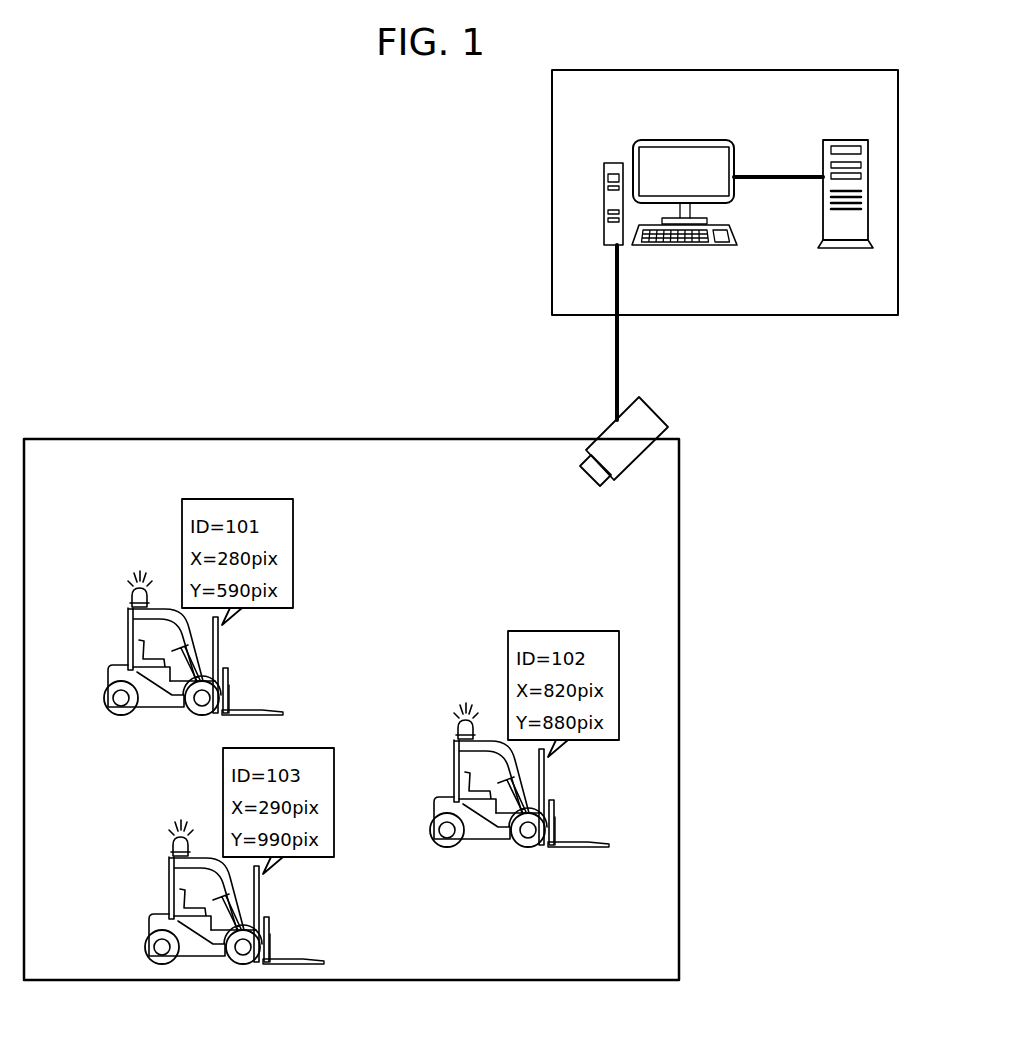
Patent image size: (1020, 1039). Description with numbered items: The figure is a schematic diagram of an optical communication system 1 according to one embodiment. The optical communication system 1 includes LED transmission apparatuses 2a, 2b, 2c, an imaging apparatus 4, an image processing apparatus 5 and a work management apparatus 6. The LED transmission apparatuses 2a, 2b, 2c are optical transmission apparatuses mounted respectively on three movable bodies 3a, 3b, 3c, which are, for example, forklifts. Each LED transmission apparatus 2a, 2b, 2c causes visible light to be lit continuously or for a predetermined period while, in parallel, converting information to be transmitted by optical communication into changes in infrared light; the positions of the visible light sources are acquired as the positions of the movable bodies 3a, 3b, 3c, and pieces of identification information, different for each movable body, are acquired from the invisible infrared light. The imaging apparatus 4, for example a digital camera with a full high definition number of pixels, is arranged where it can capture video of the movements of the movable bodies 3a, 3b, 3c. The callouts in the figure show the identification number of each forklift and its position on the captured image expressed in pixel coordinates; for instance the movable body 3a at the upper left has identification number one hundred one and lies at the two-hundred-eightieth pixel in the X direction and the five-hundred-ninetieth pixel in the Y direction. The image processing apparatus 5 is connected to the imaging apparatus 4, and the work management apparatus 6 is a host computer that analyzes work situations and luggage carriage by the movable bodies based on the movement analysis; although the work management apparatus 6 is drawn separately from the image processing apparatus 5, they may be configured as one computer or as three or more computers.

The optical communication system 1 is at (90, 140).
The LED transmission apparatus 2a is at (132, 607).
The LED transmission apparatus 2b is at (441, 723).
The LED transmission apparatus 2c is at (156, 840).
The movable body 3a is at (126, 636).
The movable body 3b is at (504, 793).
The movable body 3c is at (219, 910).
The imaging apparatus 4 is at (605, 423).
The image processing apparatus 5 is at (608, 163).
The work management apparatus 6 is at (860, 140).